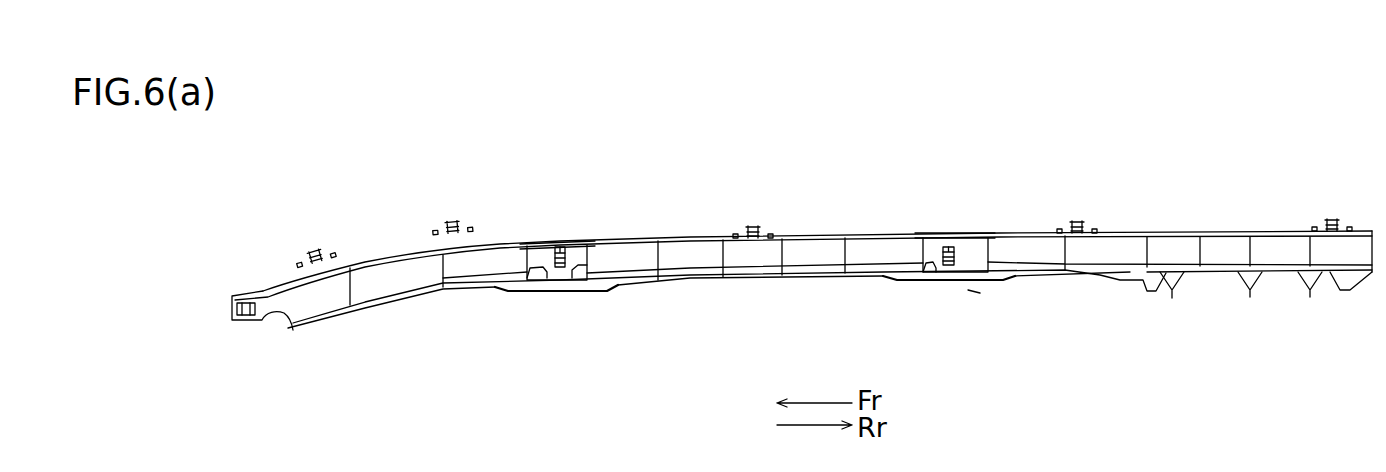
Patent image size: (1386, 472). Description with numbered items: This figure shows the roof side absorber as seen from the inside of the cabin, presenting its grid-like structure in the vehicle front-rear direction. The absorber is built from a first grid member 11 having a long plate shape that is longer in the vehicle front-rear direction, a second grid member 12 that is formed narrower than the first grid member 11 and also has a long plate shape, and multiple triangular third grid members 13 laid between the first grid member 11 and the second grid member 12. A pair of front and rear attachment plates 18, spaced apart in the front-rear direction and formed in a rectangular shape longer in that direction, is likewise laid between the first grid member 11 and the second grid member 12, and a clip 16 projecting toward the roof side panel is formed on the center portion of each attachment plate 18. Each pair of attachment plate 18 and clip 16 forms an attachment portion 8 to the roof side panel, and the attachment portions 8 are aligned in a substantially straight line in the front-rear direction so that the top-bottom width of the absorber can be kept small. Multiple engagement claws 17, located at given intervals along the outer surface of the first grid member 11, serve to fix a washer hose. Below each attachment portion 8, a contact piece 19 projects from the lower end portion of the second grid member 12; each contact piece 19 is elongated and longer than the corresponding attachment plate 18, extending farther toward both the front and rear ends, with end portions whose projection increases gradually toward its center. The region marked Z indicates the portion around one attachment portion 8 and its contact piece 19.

The attachment portion 8 is at (573, 245).
The first grid member 11 is at (883, 232).
The second grid member 12 is at (812, 272).
The third grid member 13 is at (350, 287).
The clip 16 is at (560, 247).
The engagement claw 17 is at (312, 250).
The attachment plate 18 is at (542, 257).
The contact piece 19 is at (556, 292).
The region Z is at (973, 296).